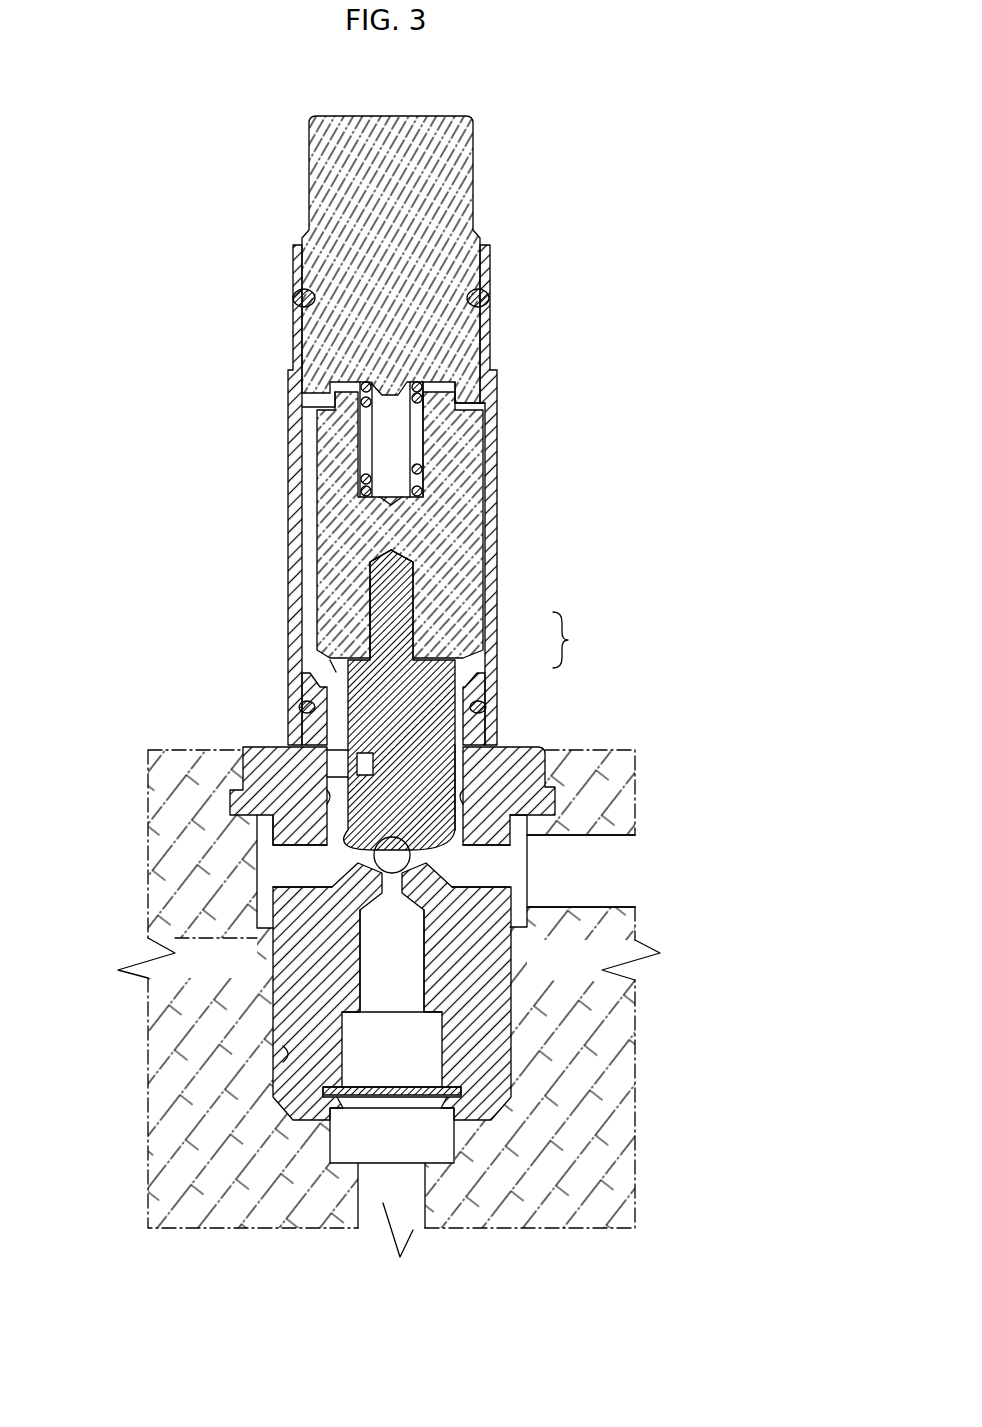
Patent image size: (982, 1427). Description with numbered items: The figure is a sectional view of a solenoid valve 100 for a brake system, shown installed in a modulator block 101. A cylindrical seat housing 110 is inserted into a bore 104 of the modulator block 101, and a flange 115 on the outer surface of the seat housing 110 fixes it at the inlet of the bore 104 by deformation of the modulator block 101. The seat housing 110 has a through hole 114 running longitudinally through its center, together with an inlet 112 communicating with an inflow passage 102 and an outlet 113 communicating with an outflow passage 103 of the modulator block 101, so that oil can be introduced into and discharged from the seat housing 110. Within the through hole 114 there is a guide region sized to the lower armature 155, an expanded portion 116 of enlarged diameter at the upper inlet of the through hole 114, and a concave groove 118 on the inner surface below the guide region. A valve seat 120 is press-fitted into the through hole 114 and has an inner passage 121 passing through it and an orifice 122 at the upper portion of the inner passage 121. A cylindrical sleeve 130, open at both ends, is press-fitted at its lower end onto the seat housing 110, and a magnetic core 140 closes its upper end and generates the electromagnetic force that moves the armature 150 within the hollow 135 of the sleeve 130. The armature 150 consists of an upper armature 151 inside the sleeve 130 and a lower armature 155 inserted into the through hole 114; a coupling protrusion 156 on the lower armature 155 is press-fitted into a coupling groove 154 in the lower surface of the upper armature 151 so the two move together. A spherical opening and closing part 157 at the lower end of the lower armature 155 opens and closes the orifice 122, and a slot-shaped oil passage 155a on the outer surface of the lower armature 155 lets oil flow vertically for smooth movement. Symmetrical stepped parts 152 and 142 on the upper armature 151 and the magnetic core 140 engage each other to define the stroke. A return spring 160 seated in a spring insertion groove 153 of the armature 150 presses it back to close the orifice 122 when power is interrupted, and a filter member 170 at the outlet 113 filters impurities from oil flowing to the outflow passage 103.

The solenoid valve 100 is at (335, 704).
The modulator block 101 is at (175, 827).
The inflow passage 102 is at (600, 877).
The outflow passage 103 is at (406, 1194).
The bore 104 is at (285, 1060).
The seat housing 110 is at (478, 1050).
The inlet 112 is at (500, 873).
The outlet 113 is at (406, 1064).
The through hole 114 is at (350, 870).
The flange 115 is at (230, 797).
The expanded portion 116 is at (313, 688).
The concave groove 118 is at (327, 797).
The valve seat 120 is at (330, 985).
The inner passage 121 is at (408, 974).
The orifice 122 is at (390, 884).
The sleeve 130 is at (492, 527).
The hollow 135 is at (323, 402).
The magnetic core 140 is at (465, 160).
The stepped parts 142 is at (476, 391).
The armature 150 is at (578, 640).
The upper armature 151 is at (440, 637).
The stepped parts 152 is at (433, 403).
The spring insertion groove 153 is at (408, 448).
The coupling groove 154 is at (370, 585).
The lower armature 155 is at (445, 688).
The oil passage 155a is at (337, 685).
The coupling protrusion 156 is at (377, 602).
The opening and closing part 157 is at (456, 791).
The return spring 160 is at (417, 468).
The filter member 170 is at (423, 1097).